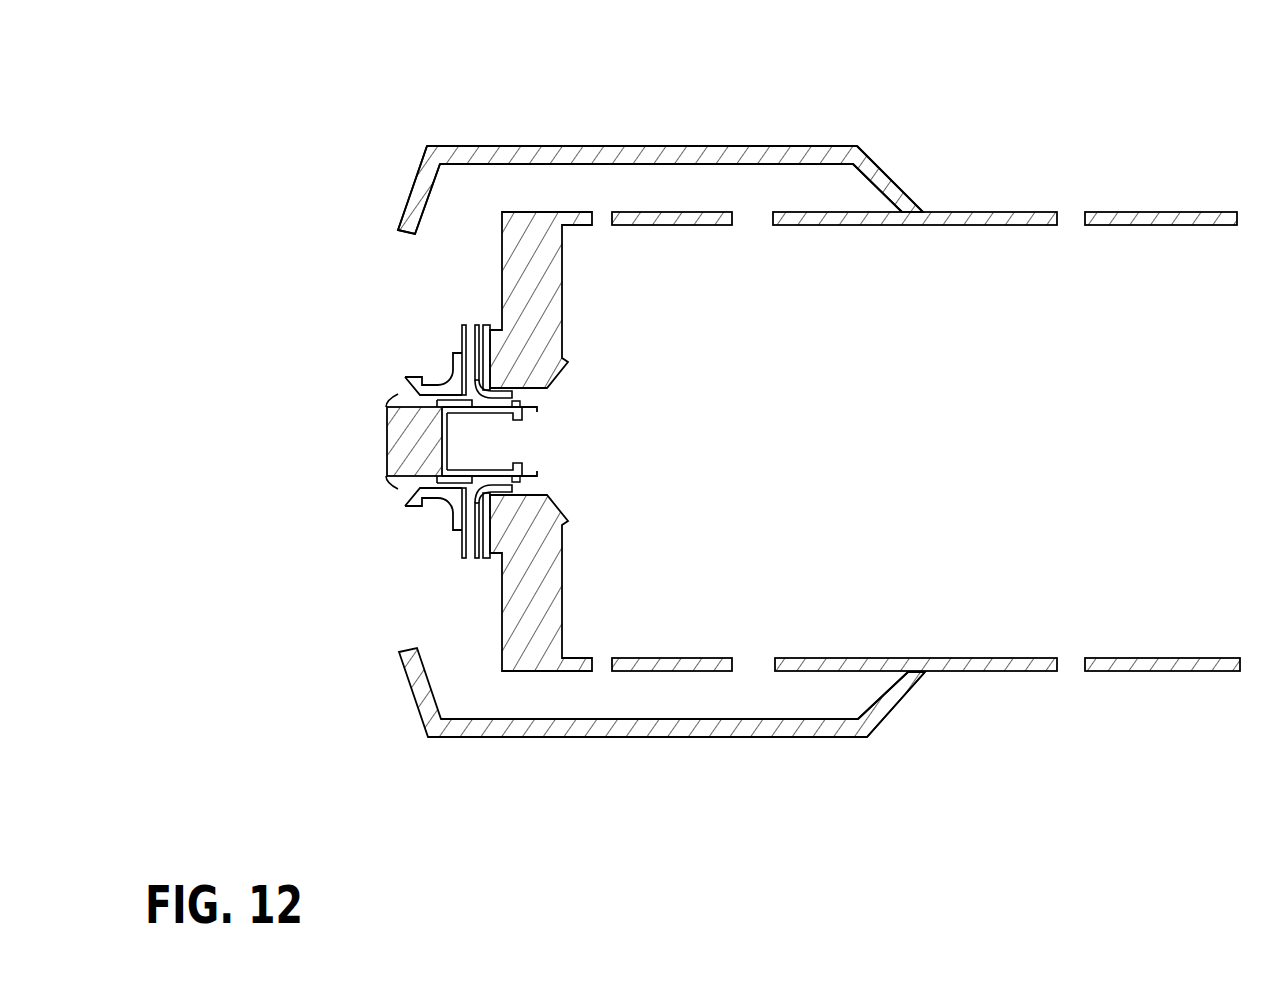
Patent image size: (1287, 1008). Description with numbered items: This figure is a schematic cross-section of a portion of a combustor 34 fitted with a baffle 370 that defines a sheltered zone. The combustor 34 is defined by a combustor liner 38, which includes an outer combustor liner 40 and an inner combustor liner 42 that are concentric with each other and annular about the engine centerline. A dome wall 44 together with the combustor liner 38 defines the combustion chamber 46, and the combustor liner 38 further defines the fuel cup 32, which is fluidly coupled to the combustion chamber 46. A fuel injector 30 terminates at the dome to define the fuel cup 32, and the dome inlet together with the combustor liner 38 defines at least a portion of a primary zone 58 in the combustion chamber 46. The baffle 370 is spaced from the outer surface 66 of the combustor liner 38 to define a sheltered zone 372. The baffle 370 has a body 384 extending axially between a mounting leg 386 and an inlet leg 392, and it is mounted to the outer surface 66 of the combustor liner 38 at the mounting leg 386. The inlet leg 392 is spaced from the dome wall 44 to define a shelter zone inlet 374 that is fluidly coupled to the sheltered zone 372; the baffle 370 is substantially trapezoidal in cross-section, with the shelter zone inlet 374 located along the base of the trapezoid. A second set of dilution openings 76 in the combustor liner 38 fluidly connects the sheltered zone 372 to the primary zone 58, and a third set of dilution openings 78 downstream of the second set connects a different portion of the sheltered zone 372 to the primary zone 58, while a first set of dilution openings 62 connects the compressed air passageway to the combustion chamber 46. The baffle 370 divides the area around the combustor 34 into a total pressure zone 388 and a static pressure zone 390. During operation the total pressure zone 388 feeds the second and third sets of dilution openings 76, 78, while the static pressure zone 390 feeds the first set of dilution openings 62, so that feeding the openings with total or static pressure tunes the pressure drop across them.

The fuel injector 30 is at (537, 478).
The fuel cup 32 is at (592, 452).
The combustor 34 is at (1063, 74).
The combustor liner 38 is at (1156, 202).
The outer combustor liner 40 is at (1203, 212).
The inner combustor liner 42 is at (1147, 672).
The dome wall 44 is at (562, 305).
The combustion chamber 46 is at (940, 452).
The primary zone 58 is at (649, 452).
The first set of dilution openings 62 is at (1073, 218).
The outer surface 66 is at (983, 673).
The second set of dilution openings 76 is at (600, 218).
The third set of dilution openings 78 is at (753, 218).
The baffle 370 is at (582, 152).
The sheltered zone 372 is at (653, 199).
The shelter zone inlet 374 is at (455, 240).
The body 384 is at (688, 155).
The mounting leg 386 is at (886, 185).
The total pressure zone 388 is at (614, 706).
The static pressure zone 390 is at (916, 108).
The inlet leg 392 is at (420, 192).